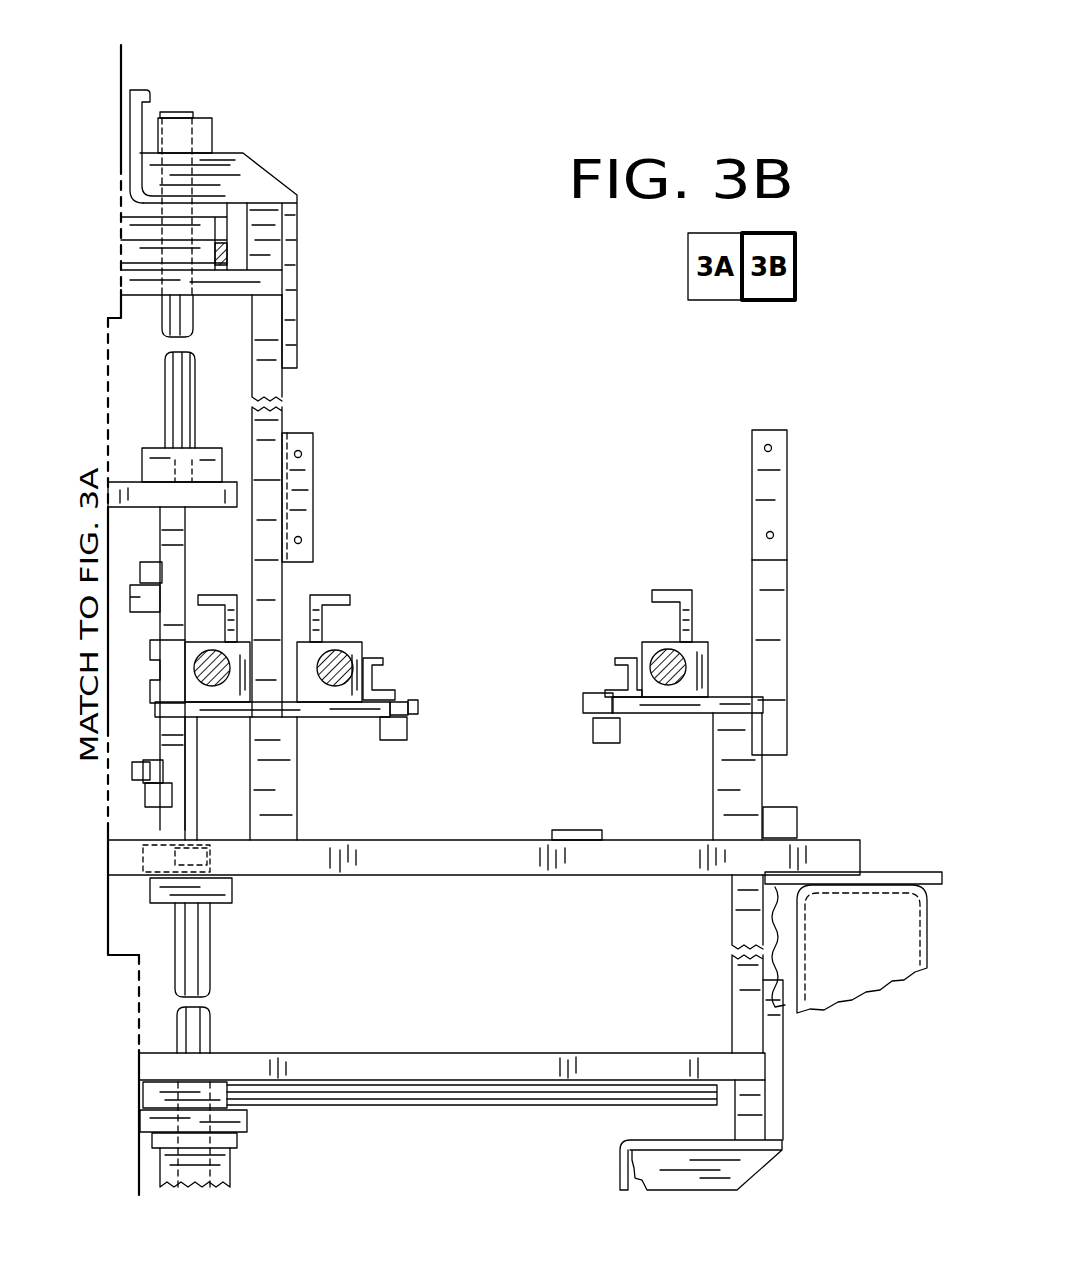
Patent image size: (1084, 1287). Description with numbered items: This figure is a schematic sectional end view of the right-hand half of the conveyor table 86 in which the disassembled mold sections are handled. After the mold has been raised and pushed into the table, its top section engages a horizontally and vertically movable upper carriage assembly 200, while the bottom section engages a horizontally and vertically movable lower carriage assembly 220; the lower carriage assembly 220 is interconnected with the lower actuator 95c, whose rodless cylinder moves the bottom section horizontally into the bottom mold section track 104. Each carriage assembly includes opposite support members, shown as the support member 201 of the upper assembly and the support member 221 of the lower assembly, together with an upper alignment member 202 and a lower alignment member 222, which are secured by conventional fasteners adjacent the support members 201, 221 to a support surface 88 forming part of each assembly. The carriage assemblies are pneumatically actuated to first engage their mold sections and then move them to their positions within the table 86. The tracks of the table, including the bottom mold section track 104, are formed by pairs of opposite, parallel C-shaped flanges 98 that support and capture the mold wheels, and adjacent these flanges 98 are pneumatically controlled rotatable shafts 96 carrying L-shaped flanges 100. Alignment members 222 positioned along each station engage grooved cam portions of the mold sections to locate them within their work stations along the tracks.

The conveyor table 86 is at (300, 157).
The support surface 88 is at (158, 521).
The rotatable shaft 96 is at (337, 652).
The C-shaped flange 98 is at (372, 672).
The L-shaped flange 100 is at (678, 590).
The bottom mold section track 104 is at (532, 708).
The upper carriage assembly 200 is at (163, 636).
The support member 201 is at (160, 628).
The upper alignment member 202 is at (128, 567).
The lower carriage assembly 220 is at (175, 776).
The support member 221 is at (128, 726).
The lower alignment member 222 is at (425, 735).
The lower actuator 95c is at (240, 1160).